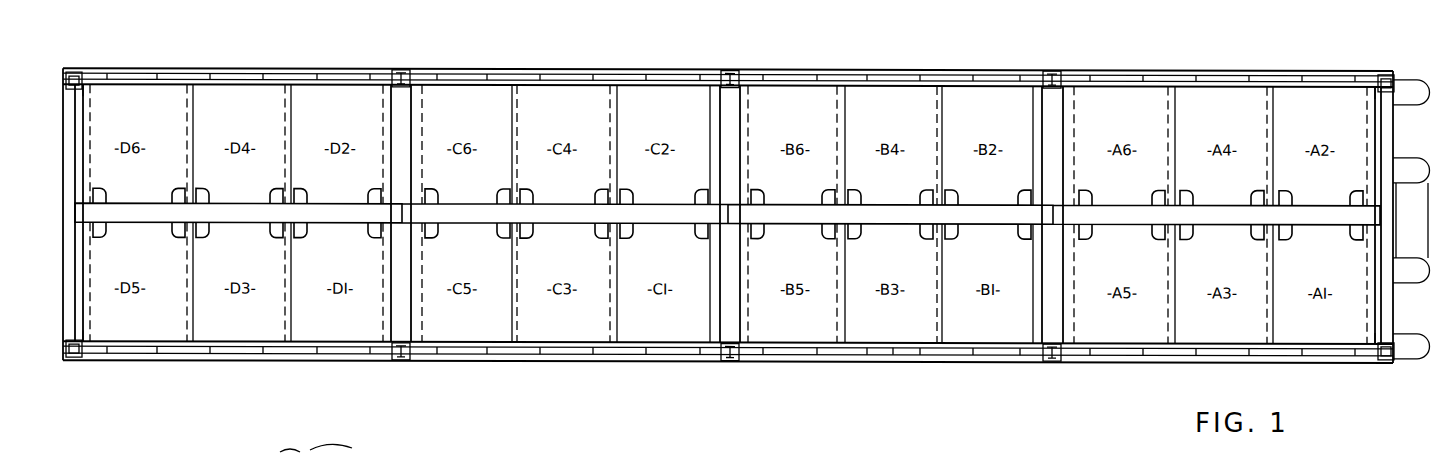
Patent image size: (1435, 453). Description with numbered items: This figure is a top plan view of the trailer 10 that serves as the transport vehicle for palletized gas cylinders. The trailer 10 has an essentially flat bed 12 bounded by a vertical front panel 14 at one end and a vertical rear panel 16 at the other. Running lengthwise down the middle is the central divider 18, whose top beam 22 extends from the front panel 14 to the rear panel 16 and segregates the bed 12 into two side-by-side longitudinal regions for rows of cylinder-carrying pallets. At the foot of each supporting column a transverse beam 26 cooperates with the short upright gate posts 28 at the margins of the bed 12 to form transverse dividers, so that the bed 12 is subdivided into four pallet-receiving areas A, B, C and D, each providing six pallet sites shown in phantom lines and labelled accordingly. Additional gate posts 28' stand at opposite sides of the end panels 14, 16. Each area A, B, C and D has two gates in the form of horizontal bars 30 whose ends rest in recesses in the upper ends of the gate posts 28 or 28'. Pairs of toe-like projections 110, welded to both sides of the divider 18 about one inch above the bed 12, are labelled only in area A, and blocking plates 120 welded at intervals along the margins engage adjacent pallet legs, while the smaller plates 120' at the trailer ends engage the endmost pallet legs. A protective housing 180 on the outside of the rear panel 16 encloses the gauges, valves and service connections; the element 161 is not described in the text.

The trailer 10 is at (982, 380).
The bed 12 is at (1331, 96).
The front panel 14 is at (66, 98).
The rear panel 16 is at (1392, 130).
The central divider 18 is at (872, 231).
The top beam 22 is at (875, 206).
The transverse beam 26 is at (404, 128).
The gate post 28 is at (744, 218).
The gate post 28' is at (745, 218).
The horizontal bar 30 is at (226, 70).
The toe-like projection 110 is at (1093, 188).
The plate 120 is at (731, 211).
The plate 120' is at (729, 238).
The protective housing 180 is at (1412, 254).
The element 161 is at (331, 443).
The pallet-receiving area A is at (1195, 58).
The pallet-receiving area B is at (885, 58).
The pallet-receiving area C is at (587, 58).
The pallet-receiving area D is at (242, 58).